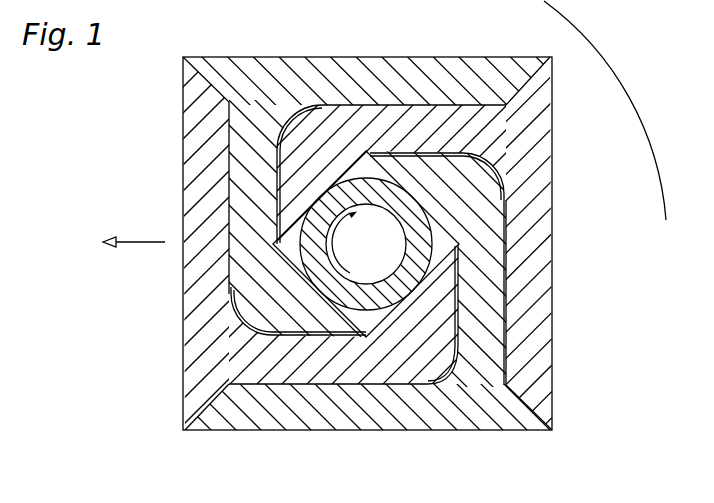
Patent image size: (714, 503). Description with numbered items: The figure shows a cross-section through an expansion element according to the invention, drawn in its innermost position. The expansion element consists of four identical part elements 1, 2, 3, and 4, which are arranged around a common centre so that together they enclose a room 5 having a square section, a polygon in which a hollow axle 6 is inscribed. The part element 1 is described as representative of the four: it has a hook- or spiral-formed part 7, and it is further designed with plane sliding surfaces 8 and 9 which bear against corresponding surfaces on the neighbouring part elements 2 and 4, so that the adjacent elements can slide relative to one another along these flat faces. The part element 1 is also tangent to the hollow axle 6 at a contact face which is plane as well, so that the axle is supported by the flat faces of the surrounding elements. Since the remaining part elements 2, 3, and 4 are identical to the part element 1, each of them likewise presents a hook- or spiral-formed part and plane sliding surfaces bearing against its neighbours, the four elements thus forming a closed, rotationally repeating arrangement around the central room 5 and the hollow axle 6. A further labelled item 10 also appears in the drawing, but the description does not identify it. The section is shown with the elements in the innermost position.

The upper housing wall 1 is at (356, 75).
The housing 2 is at (538, 275).
The lower housing wall 3 is at (433, 418).
The left housing wall 4 is at (195, 337).
The right rotor segment 5 is at (457, 228).
The central bore 6 is at (325, 207).
The lower vane 7 is at (268, 302).
The left rotor segment 8 is at (229, 174).
The upper vane 9 is at (433, 105).
The hub 10 is at (303, 266).